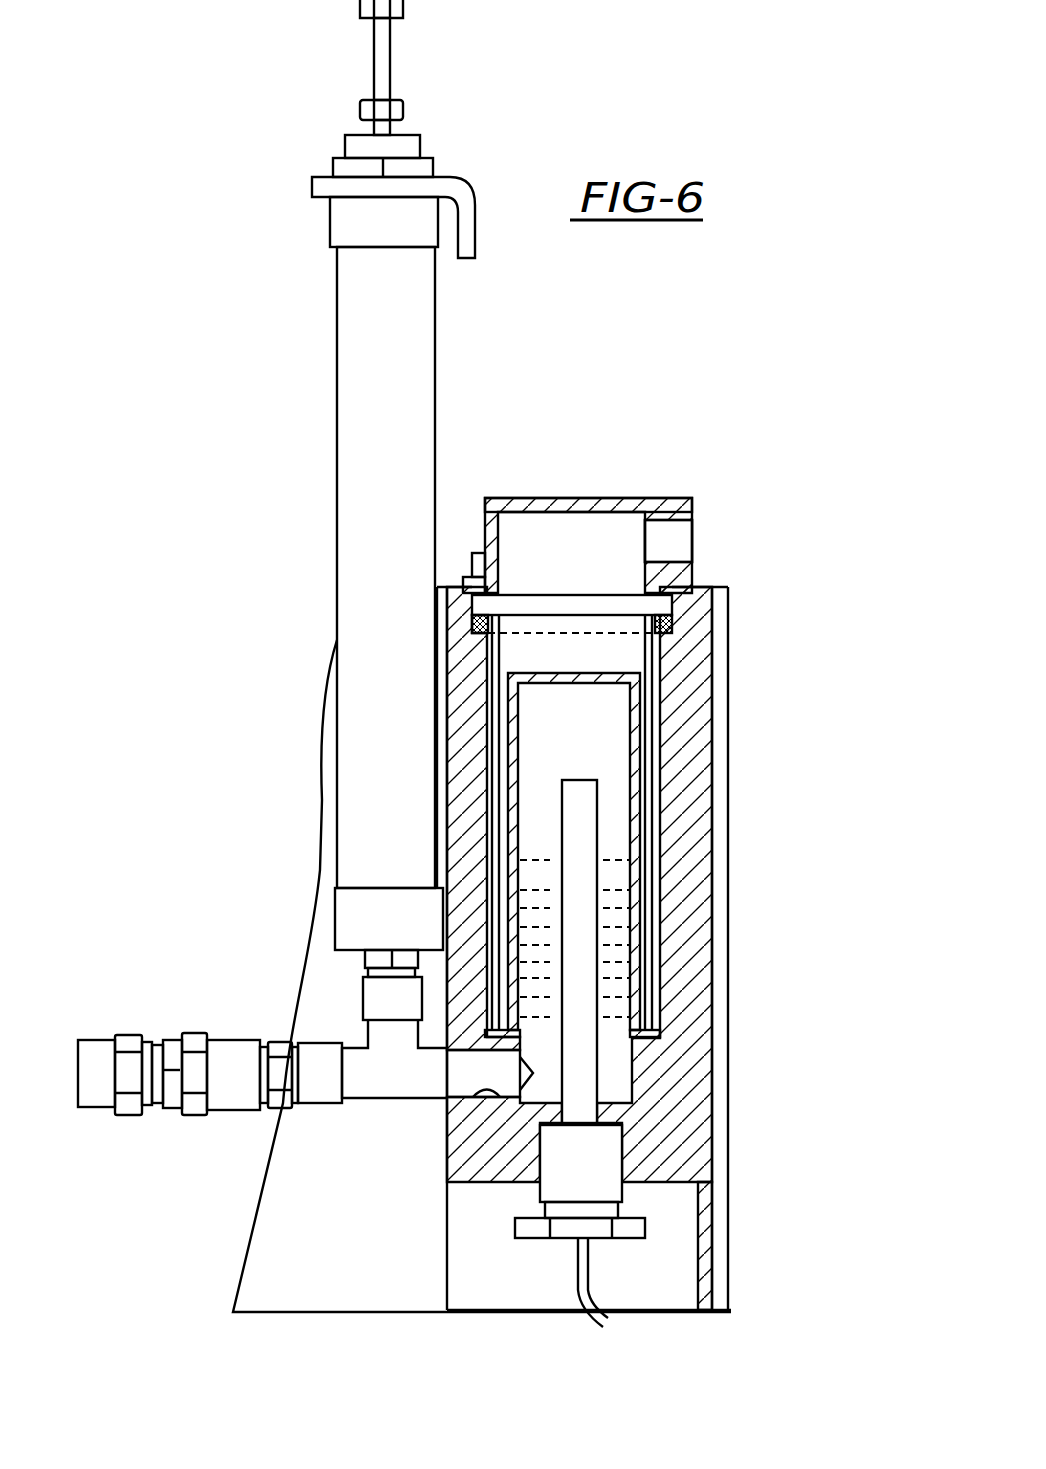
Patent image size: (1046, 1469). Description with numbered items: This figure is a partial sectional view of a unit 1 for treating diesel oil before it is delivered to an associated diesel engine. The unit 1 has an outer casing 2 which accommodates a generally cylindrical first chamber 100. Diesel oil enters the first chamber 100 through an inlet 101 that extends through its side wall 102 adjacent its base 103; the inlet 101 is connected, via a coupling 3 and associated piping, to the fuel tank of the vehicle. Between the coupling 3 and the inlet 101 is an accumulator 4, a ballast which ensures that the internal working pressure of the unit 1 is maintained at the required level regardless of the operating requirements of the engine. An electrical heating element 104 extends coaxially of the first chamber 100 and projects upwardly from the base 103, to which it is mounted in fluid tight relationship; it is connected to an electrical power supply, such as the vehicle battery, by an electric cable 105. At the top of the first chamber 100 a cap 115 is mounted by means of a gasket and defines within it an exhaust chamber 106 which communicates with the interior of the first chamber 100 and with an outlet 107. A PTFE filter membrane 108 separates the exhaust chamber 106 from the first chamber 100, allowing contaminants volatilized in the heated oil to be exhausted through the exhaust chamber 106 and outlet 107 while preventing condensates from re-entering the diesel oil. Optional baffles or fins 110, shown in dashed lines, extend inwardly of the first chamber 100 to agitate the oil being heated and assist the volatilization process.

The unit 1 is at (798, 764).
The outer casing 2 is at (723, 952).
The coupling 3 is at (233, 1034).
The accumulator 4 is at (348, 509).
The first chamber 100 is at (652, 890).
The inlet 101 is at (473, 1095).
The side wall 102 is at (460, 1003).
The base 103 is at (550, 1107).
The electrical heating element 104 is at (587, 1060).
The electric cable 105 is at (577, 1295).
The exhaust chamber 106 is at (530, 523).
The outlet 107 is at (675, 547).
The PTFE filter membrane 108 is at (603, 633).
The baffles or fins 110 is at (518, 855).
The cap 115 is at (593, 500).